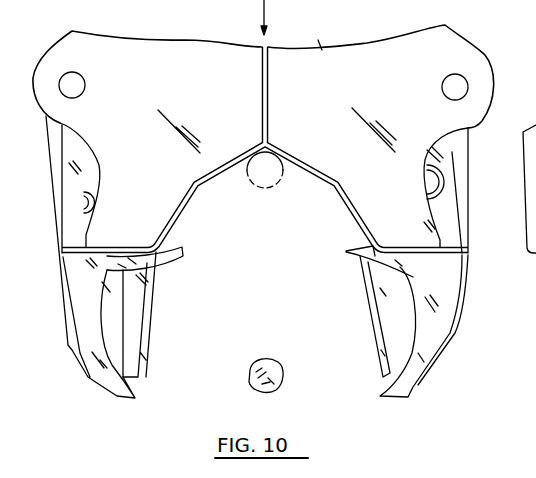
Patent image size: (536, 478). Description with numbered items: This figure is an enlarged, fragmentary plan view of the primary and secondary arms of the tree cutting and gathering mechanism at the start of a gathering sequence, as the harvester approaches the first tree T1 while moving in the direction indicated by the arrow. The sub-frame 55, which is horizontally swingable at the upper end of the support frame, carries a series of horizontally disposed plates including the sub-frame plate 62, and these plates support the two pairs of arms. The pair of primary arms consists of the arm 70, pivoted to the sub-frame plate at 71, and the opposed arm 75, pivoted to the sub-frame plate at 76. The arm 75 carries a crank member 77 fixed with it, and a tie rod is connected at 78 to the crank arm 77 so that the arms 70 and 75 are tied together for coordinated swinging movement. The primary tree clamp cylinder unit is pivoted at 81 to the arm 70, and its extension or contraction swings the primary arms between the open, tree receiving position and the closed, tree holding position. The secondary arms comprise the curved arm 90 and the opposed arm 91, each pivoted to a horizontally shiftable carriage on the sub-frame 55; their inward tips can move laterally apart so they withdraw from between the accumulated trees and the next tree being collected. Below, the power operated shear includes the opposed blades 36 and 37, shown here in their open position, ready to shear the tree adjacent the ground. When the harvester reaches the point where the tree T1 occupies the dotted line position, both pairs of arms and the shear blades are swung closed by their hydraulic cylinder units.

The shear blade 36 is at (148, 323).
The shear blade 37 is at (367, 302).
The sub-frame 55 is at (321, 46).
The sub-frame plate 62 is at (387, 53).
The primary arm 70 is at (98, 388).
The pivot 71 is at (77, 85).
The primary arm 75 is at (417, 387).
The pivot 76 is at (468, 87).
The crank member 77 is at (458, 151).
The tie rod connection 78 is at (433, 181).
The cylinder pivot 81 is at (84, 192).
The curved arm 90 is at (153, 267).
The opposed arm 91 is at (367, 268).
The first tree T1 is at (277, 190).